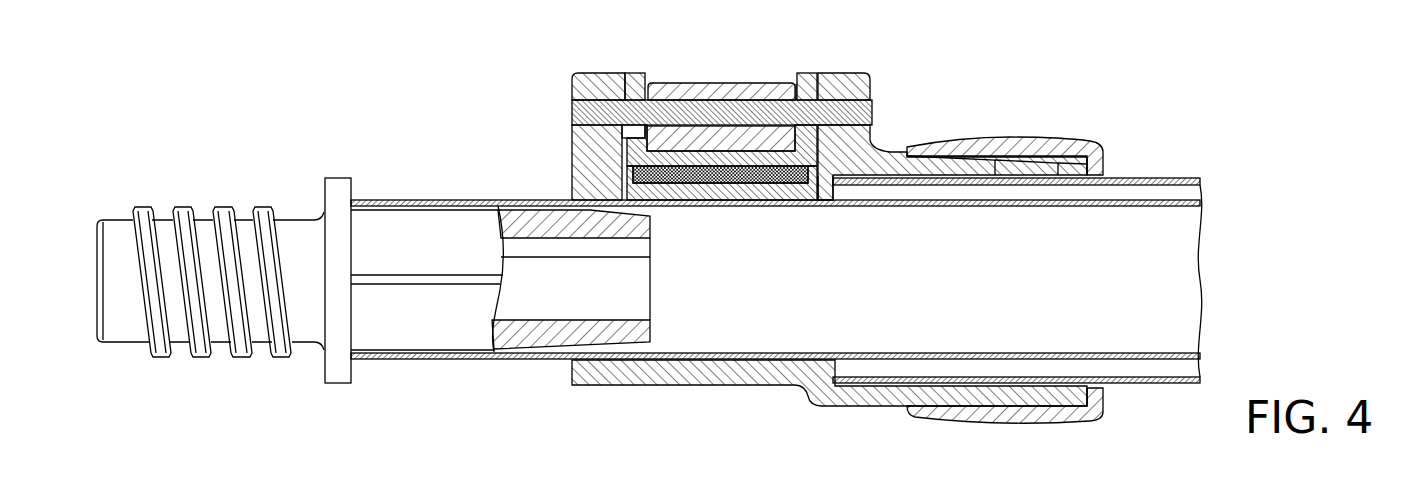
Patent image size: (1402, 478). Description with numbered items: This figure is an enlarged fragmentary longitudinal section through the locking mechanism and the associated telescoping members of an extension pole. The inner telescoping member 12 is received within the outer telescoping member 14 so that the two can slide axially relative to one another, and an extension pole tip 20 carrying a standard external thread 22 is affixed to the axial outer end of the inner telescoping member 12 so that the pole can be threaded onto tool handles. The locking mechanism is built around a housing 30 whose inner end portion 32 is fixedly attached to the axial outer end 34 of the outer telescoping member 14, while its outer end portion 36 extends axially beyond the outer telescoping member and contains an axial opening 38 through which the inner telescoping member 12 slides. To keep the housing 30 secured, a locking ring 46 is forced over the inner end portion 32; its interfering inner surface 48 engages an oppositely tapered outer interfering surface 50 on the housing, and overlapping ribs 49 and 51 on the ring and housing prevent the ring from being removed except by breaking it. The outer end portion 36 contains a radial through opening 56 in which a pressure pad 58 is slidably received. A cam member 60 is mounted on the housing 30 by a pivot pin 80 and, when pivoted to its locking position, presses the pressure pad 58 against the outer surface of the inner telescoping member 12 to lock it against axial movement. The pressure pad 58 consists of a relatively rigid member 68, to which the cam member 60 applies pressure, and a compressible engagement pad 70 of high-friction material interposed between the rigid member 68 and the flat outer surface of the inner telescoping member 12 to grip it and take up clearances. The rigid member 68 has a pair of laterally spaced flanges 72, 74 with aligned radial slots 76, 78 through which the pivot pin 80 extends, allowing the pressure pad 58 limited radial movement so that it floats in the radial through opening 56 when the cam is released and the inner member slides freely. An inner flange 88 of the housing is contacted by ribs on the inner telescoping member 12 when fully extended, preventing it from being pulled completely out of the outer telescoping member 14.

The inner telescoping member 12 is at (438, 203).
The outer telescoping member 14 is at (1150, 177).
The extension pole tip 20 is at (185, 197).
The external thread 22 is at (215, 357).
The housing 30 is at (880, 112).
The inner end portion 32 is at (967, 162).
The axial outer end 34 is at (1058, 172).
The outer end portion 36 is at (583, 192).
The axial opening 38 is at (602, 198).
The locking ring 46 is at (1013, 142).
The interfering inner surface 48 is at (990, 157).
The rib 49 is at (1010, 400).
The outer interfering surface 50 is at (1030, 155).
The rib 51 is at (1018, 398).
The radial through opening 56 is at (860, 175).
The pressure pad 58 is at (800, 137).
The cam member 60 is at (748, 85).
The rigid member 68 is at (673, 157).
The engagement pad 70 is at (745, 187).
The flange 72 is at (637, 72).
The flange 74 is at (803, 72).
The radial slot 76 is at (630, 131).
The radial slot 78 is at (792, 96).
The pivot pin 80 is at (707, 115).
The inner flange 88 is at (832, 193).